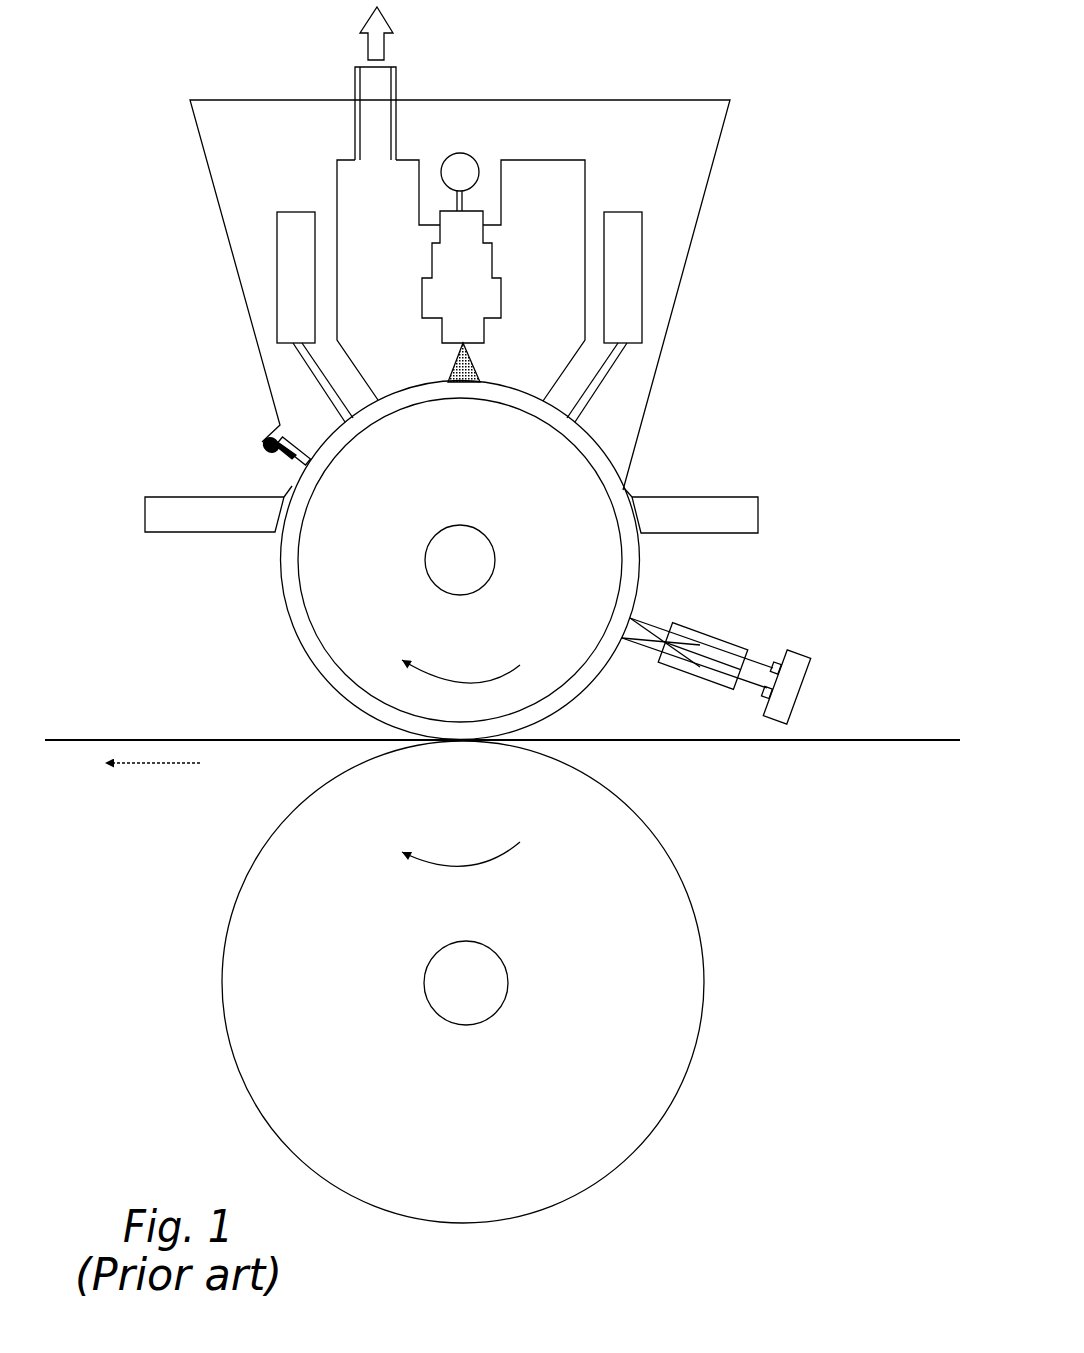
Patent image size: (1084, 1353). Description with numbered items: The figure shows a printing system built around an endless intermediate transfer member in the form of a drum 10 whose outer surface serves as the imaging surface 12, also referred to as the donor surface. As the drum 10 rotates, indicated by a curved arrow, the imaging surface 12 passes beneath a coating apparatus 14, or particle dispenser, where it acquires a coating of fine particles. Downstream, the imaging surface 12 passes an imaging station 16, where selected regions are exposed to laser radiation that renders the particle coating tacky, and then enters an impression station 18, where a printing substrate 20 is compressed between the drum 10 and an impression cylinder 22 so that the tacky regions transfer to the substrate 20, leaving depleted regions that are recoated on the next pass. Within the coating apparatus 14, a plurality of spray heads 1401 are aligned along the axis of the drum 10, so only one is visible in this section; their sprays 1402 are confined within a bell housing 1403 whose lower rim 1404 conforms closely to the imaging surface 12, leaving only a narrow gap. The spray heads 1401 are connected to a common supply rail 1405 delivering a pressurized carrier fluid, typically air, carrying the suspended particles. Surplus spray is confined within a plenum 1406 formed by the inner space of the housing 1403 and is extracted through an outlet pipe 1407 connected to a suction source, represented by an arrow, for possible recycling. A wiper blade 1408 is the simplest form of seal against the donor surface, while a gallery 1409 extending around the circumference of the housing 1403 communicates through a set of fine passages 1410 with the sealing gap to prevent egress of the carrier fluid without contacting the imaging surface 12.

The drum 10 is at (327, 620).
The imaging surface 12 is at (297, 642).
The coating apparatus 14 is at (665, 80).
The imaging station 16 is at (745, 625).
The impression station 18 is at (353, 730).
The printing substrate 20 is at (707, 740).
The impression cylinder 22 is at (657, 1020).
The spray head 1401 is at (482, 298).
The spray 1402 is at (470, 363).
The bell housing 1403 is at (692, 163).
The lower rim 1404 is at (594, 452).
The common supply rail 1405 is at (466, 173).
The plenum 1406 is at (353, 210).
The outlet pipe 1407 is at (355, 92).
The wiper blade 1408 is at (262, 453).
The gallery 1409 is at (292, 278).
The fine passages 1410 is at (322, 392).